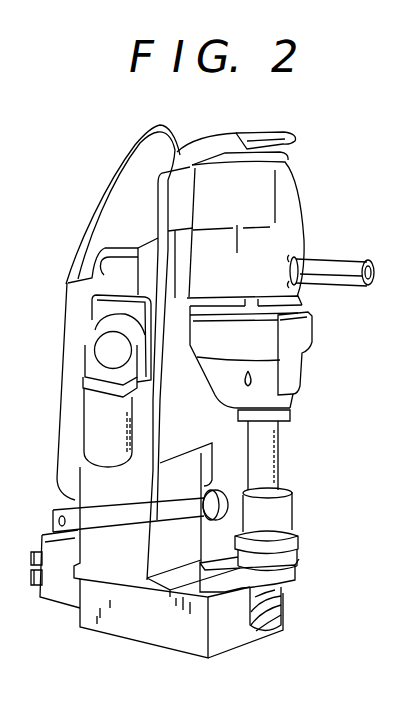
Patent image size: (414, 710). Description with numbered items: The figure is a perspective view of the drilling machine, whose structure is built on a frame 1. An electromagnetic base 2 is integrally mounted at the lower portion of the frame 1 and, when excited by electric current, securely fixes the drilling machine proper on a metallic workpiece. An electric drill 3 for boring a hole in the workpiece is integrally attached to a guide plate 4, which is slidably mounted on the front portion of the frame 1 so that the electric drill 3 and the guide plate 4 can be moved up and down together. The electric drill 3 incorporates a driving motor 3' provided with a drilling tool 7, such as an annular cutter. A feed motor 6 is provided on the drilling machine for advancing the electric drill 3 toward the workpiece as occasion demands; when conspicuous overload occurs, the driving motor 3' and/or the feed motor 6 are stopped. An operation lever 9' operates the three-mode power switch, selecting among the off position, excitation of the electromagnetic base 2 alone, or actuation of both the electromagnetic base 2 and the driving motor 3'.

The frame 1 is at (77, 355).
The electromagnetic base 2 is at (152, 622).
The electric drill 3 is at (261, 214).
The driving motor 3' is at (340, 243).
The guide plate 4 is at (198, 423).
The feed motor 6 is at (100, 428).
The drilling tool 7 is at (283, 600).
The operation lever 9' is at (118, 505).